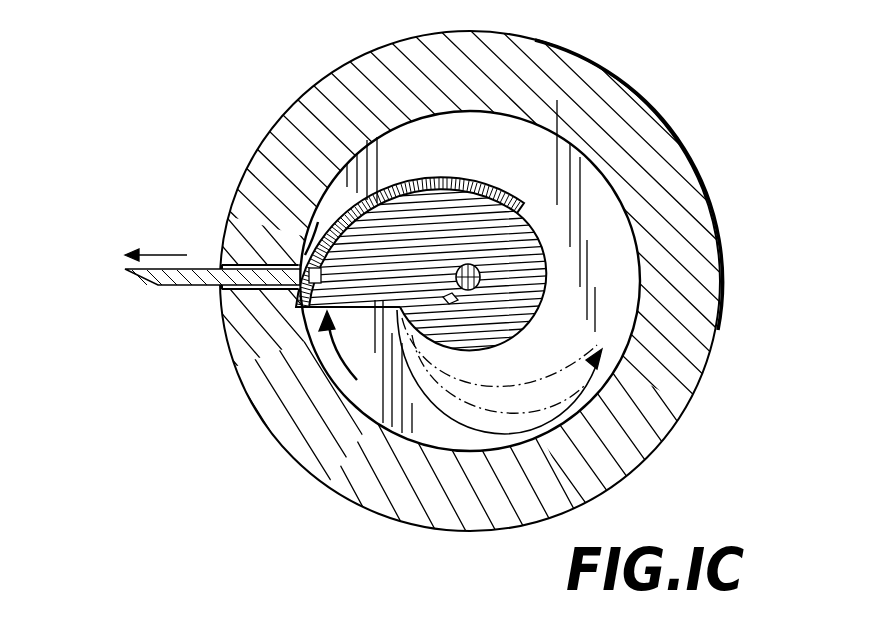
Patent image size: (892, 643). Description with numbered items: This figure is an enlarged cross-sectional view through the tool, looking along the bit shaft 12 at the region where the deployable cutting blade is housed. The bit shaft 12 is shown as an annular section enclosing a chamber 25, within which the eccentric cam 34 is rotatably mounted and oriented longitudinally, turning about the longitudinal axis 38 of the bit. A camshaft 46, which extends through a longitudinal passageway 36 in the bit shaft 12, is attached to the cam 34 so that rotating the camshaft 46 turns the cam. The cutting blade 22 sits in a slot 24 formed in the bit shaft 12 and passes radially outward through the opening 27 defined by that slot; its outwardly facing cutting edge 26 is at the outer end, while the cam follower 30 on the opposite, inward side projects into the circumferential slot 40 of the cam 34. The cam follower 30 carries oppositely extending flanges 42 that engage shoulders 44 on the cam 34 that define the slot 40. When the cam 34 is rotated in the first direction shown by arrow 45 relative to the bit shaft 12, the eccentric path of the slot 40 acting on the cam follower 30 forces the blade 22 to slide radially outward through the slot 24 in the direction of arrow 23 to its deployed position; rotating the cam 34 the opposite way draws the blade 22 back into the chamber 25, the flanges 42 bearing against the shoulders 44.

The bit shaft 12 is at (722, 266).
The cutting blade 22 is at (202, 288).
The arrow 23 is at (152, 231).
The slot 24 is at (256, 290).
The chamber 25 is at (595, 182).
The cutting edge 26 is at (132, 280).
The opening 27 is at (222, 264).
The cam follower 30 is at (318, 222).
The eccentric cam 34 is at (473, 341).
The longitudinal passageway 36 is at (617, 237).
The longitudinal axis 38 is at (470, 277).
The circumferential slot 40 is at (387, 195).
The flanges 42 is at (313, 318).
The shoulders 44 is at (330, 228).
The arrow 45 is at (357, 380).
The camshaft 46 is at (449, 298).